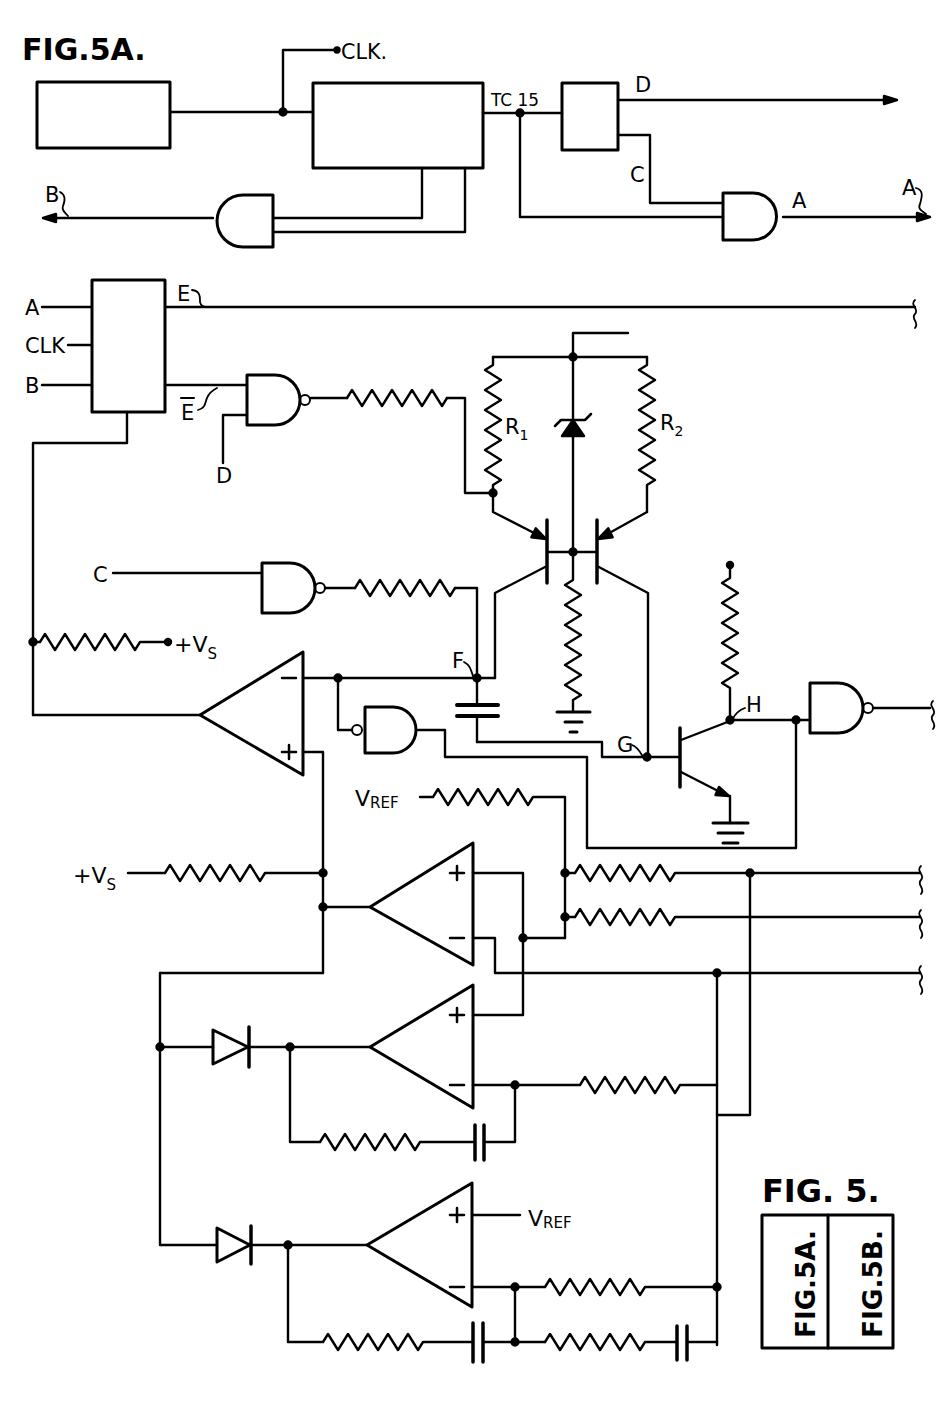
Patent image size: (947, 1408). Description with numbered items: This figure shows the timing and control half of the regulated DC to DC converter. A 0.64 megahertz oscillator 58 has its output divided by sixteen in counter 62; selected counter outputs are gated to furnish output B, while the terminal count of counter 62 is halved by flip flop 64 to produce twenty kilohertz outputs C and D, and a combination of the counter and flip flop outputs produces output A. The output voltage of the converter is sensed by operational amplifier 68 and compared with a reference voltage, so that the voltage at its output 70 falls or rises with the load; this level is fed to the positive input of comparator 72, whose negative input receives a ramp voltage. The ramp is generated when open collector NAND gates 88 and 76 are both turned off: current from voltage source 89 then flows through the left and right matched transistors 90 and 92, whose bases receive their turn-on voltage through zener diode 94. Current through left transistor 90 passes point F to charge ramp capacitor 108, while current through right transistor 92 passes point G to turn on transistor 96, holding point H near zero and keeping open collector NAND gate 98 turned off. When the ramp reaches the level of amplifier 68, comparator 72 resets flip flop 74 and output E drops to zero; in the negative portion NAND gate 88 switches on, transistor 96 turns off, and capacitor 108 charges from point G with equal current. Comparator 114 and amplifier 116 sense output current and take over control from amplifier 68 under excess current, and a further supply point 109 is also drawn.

In FIG. 5A, the oscillator 58 is at (138, 150).
In FIG. 5A, the counter 62 is at (437, 68).
In FIG. 5A, the flip flop 64 is at (589, 83).
In FIG. 5, the operational amplifier 68 is at (416, 1267).
In FIG. 5, the amplifier output 70 is at (436, 1208).
In FIG. 5, the comparator 72 is at (222, 717).
In FIG. 5, the flip flop 74 is at (142, 360).
In FIG. 5, the open collector NAND gate 76 is at (283, 414).
In FIG. 5, the open collector NAND gate 88 is at (298, 602).
In FIG. 5, the voltage source 89 is at (634, 342).
In FIG. 5, the left matched transistor 90 is at (552, 539).
In FIG. 5, the right matched transistor 92 is at (592, 539).
In FIG. 5, the zener diode 94 is at (584, 432).
In FIG. 5, the transistor 96 is at (689, 760).
In FIG. 5, the open collector NAND gate 98 is at (846, 722).
In FIG. 5, the ramp capacitor 108 is at (495, 718).
In FIG. 5, the supply voltage source 109 is at (747, 625).
In FIG. 5, the comparator 114 is at (402, 886).
In FIG. 5, the amplifier 116 is at (403, 1027).